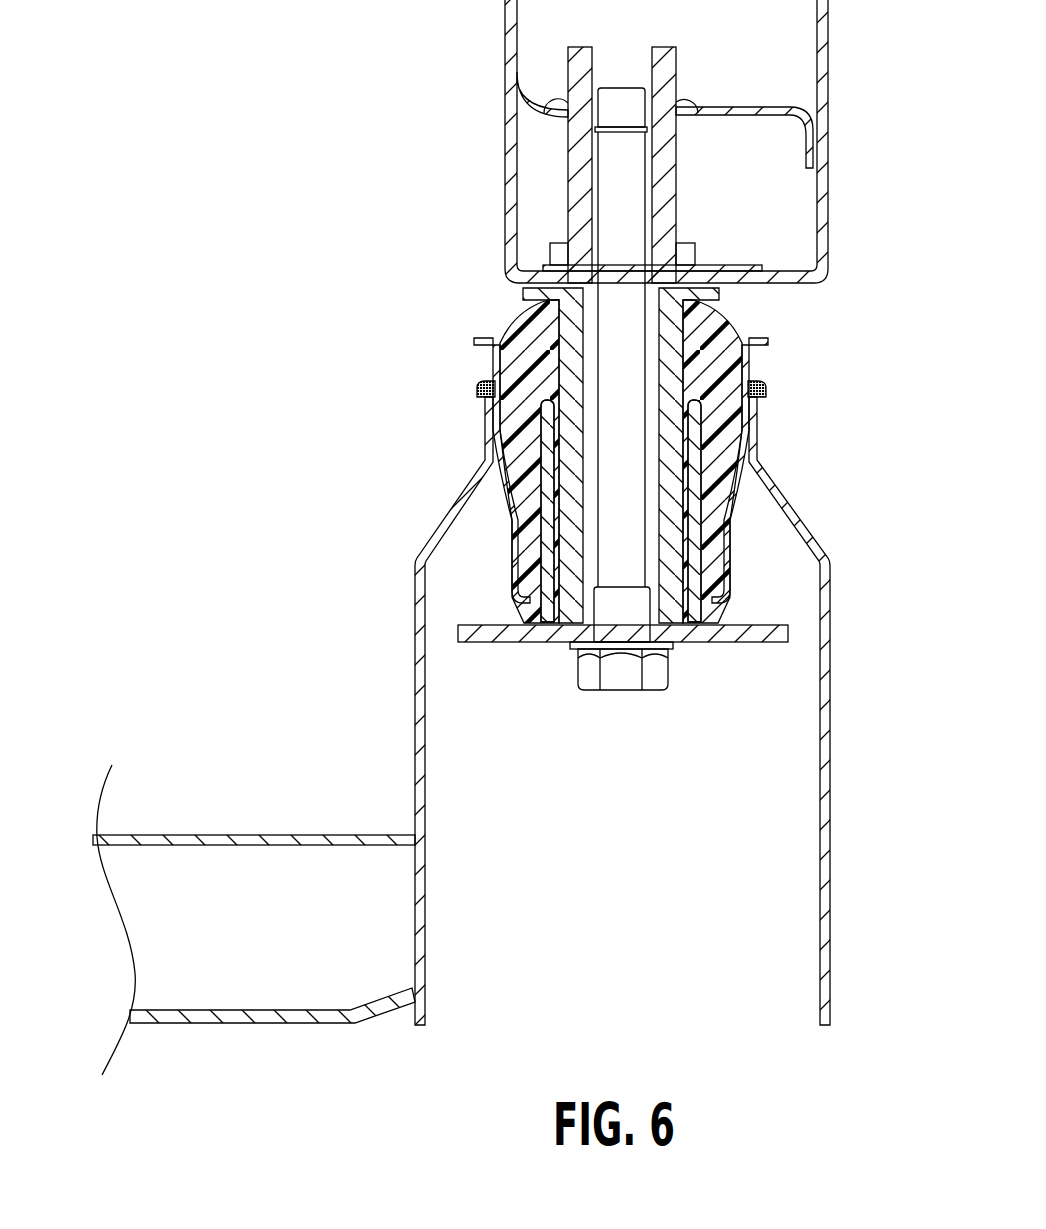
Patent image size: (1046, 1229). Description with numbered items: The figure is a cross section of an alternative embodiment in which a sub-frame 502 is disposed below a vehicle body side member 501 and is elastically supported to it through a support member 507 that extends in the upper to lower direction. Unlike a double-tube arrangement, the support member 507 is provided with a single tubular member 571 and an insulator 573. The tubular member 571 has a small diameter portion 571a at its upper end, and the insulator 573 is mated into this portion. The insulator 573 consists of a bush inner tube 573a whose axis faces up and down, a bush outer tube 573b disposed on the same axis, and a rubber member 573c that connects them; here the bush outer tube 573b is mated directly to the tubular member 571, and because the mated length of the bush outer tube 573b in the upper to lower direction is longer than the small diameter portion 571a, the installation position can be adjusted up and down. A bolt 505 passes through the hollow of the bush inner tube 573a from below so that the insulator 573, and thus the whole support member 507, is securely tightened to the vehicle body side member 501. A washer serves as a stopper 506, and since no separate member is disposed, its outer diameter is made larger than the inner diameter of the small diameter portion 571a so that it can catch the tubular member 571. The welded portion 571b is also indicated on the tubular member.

The vehicle body side member 501 is at (827, 135).
The sub-frame 502 is at (293, 835).
The bolt 505 is at (632, 680).
The stopper 506 is at (460, 637).
The support member 507 is at (602, 638).
The tubular member 571 is at (655, 693).
The small diameter portion 571a is at (762, 431).
The welded portion 571b is at (762, 390).
The insulator 573 is at (535, 437).
The bush inner tube 573a is at (523, 290).
The bush outer tube 573b is at (490, 344).
The rubber member 573c is at (523, 315).